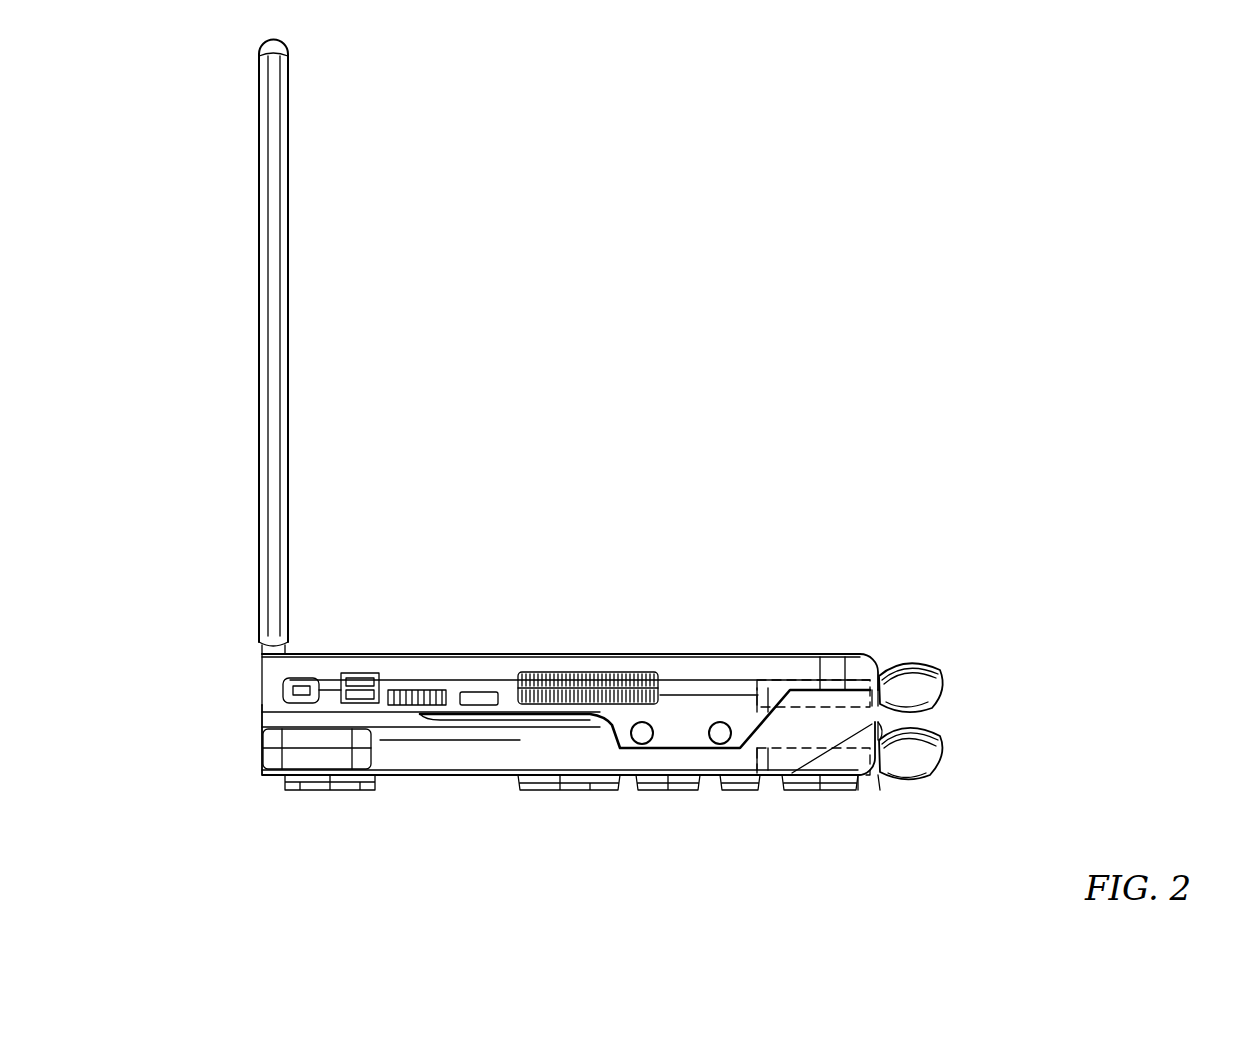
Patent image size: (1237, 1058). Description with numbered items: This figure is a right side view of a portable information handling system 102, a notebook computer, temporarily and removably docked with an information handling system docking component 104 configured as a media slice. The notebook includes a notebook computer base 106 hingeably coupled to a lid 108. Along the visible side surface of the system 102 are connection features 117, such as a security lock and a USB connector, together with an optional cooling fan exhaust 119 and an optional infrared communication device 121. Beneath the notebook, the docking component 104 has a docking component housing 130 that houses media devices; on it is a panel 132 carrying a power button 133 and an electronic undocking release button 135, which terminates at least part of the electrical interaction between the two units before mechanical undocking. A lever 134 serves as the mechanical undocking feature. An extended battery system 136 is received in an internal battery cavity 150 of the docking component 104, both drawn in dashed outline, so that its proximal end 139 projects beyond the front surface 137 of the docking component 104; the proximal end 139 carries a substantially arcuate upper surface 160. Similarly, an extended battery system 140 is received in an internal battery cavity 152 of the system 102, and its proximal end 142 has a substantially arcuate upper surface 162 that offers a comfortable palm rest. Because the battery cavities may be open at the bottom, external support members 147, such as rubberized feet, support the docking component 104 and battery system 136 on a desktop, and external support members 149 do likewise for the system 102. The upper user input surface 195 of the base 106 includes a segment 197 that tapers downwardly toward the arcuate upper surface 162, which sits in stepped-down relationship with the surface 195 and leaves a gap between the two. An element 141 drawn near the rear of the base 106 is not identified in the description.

The portable information handling system 102 is at (656, 655).
The information handling system docking component 104 is at (445, 775).
The notebook computer base 106 is at (702, 672).
The lid 108 is at (259, 372).
The connectors or connection features 117 is at (360, 678).
The cooling fan exhaust 119 is at (560, 678).
The infrared communication device 121 is at (475, 692).
The docking component housing 130 is at (400, 750).
The panel 132 is at (668, 744).
The power button 133 is at (641, 744).
The lever 134 is at (285, 752).
The electronic undocking release button 135 is at (718, 744).
The extended battery system 136 is at (935, 756).
The front surface 137 is at (930, 740).
The proximal end 139 is at (932, 770).
The extended battery system 140 is at (940, 692).
The grip inner edge 141 is at (880, 678).
The proximal end 142 is at (912, 684).
The external support members 147 is at (905, 778).
The external support members 149 is at (920, 722).
The internal battery cavity 150 is at (770, 762).
The internal battery cavity 152 is at (775, 686).
The substantially arcuate upper surface 160 is at (938, 752).
The substantially arcuate upper surface 162 is at (912, 670).
The upper user input surface 195 is at (808, 655).
The segment 197 is at (872, 668).